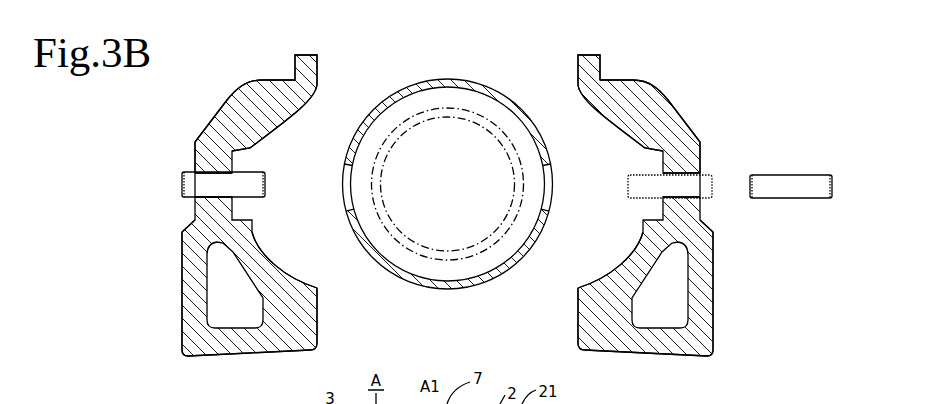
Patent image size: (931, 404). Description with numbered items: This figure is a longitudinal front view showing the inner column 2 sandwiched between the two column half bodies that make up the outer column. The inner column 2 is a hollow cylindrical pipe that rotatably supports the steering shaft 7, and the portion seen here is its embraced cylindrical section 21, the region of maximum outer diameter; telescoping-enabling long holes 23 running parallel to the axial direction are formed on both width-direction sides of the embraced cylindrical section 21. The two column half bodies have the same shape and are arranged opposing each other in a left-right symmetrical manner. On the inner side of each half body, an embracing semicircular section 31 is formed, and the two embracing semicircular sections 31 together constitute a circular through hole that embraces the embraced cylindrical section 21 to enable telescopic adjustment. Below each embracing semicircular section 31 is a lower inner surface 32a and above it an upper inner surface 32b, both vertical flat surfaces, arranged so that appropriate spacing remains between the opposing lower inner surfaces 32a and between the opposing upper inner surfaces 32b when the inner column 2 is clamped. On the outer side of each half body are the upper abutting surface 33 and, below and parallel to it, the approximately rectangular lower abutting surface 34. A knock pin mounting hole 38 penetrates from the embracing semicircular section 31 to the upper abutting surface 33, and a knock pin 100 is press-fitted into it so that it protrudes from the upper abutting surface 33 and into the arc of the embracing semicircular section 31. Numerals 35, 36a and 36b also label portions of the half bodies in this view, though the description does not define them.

The inner column 2 is at (493, 85).
The embraced cylindrical section 21 is at (441, 80).
The telescoping-enabling long hole 23 is at (552, 178).
The steering shaft 7 is at (474, 257).
The embracing semicircular section 31 is at (263, 253).
The lower inner surface 32a is at (320, 303).
The upper inner surface 32b is at (320, 70).
The upper abutting surface 33 is at (196, 160).
The lower abutting surface 34 is at (187, 264).
The step portion 35 is at (192, 228).
The upper arm portion 36a is at (228, 103).
The bottom portion 36b is at (218, 356).
The knock pin mounting hole 38 is at (213, 175).
The knock pin 100 is at (256, 180).